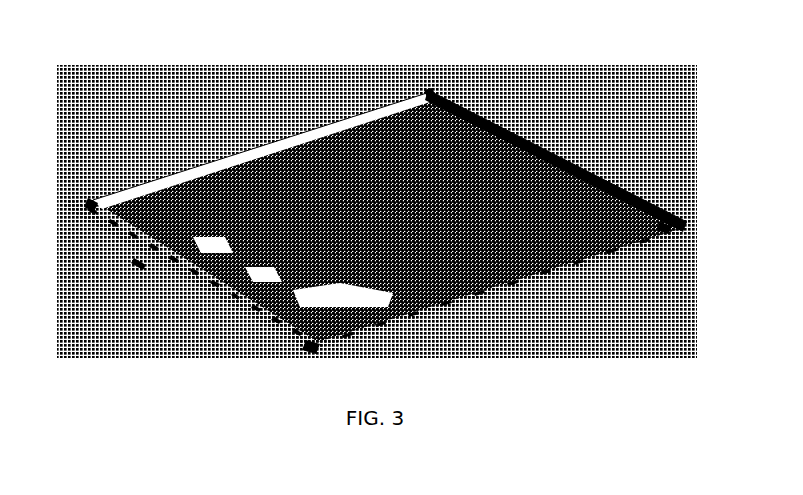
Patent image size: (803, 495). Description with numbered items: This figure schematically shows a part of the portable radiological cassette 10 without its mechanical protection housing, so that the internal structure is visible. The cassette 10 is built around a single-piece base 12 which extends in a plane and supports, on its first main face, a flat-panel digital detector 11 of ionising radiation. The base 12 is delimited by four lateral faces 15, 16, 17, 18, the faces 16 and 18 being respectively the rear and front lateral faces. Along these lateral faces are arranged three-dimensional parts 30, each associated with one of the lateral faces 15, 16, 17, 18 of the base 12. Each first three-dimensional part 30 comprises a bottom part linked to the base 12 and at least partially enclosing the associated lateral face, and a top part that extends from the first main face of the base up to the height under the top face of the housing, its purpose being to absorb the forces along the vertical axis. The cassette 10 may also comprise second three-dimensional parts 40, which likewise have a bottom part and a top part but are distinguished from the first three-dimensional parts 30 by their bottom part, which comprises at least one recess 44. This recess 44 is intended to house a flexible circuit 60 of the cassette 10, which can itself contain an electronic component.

The portable radiological cassette 10 is at (223, 33).
The digital detector 11 is at (426, 96).
The single-piece base 12 is at (338, 338).
The lateral face 15 is at (186, 302).
The lateral face 16 is at (215, 128).
The lateral face 17 is at (573, 129).
The lateral face 18 is at (560, 299).
The first three-dimensional part 30 is at (303, 124).
The second three-dimensional part 40 is at (95, 205).
The recess 44 is at (133, 273).
The flexible circuit 60 is at (137, 262).